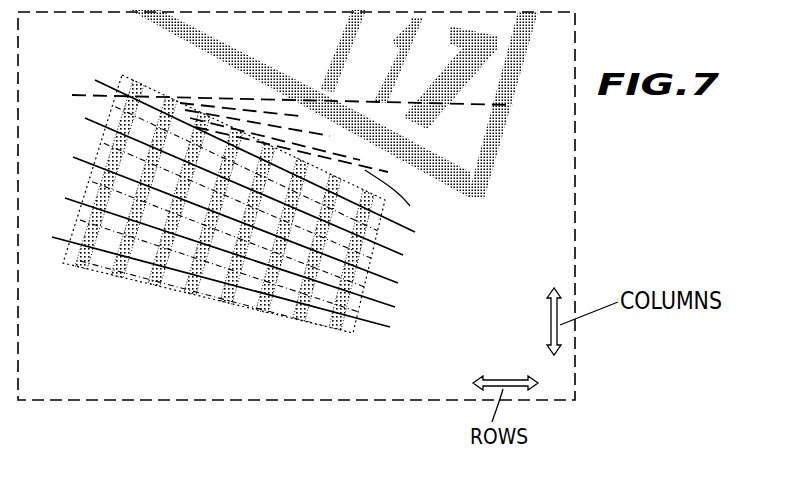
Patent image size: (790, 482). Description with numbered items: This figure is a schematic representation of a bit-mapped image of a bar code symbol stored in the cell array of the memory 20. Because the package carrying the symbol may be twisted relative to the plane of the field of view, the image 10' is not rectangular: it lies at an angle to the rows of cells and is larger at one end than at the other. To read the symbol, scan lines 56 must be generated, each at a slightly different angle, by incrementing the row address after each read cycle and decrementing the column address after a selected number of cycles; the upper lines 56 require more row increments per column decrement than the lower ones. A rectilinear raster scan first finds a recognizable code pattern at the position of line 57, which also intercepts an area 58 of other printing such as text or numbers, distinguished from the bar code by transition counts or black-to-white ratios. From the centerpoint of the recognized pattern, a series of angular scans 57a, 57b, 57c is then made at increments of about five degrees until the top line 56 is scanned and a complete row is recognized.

The memory 20 is at (577, 197).
The image of symbol 10' is at (224, 226).
The scan lines 56 is at (415, 231).
The line 57 is at (173, 97).
The scan line 57a is at (287, 115).
The scan line 57b is at (325, 133).
The scan line 57c is at (367, 165).
The area 58 is at (406, 95).